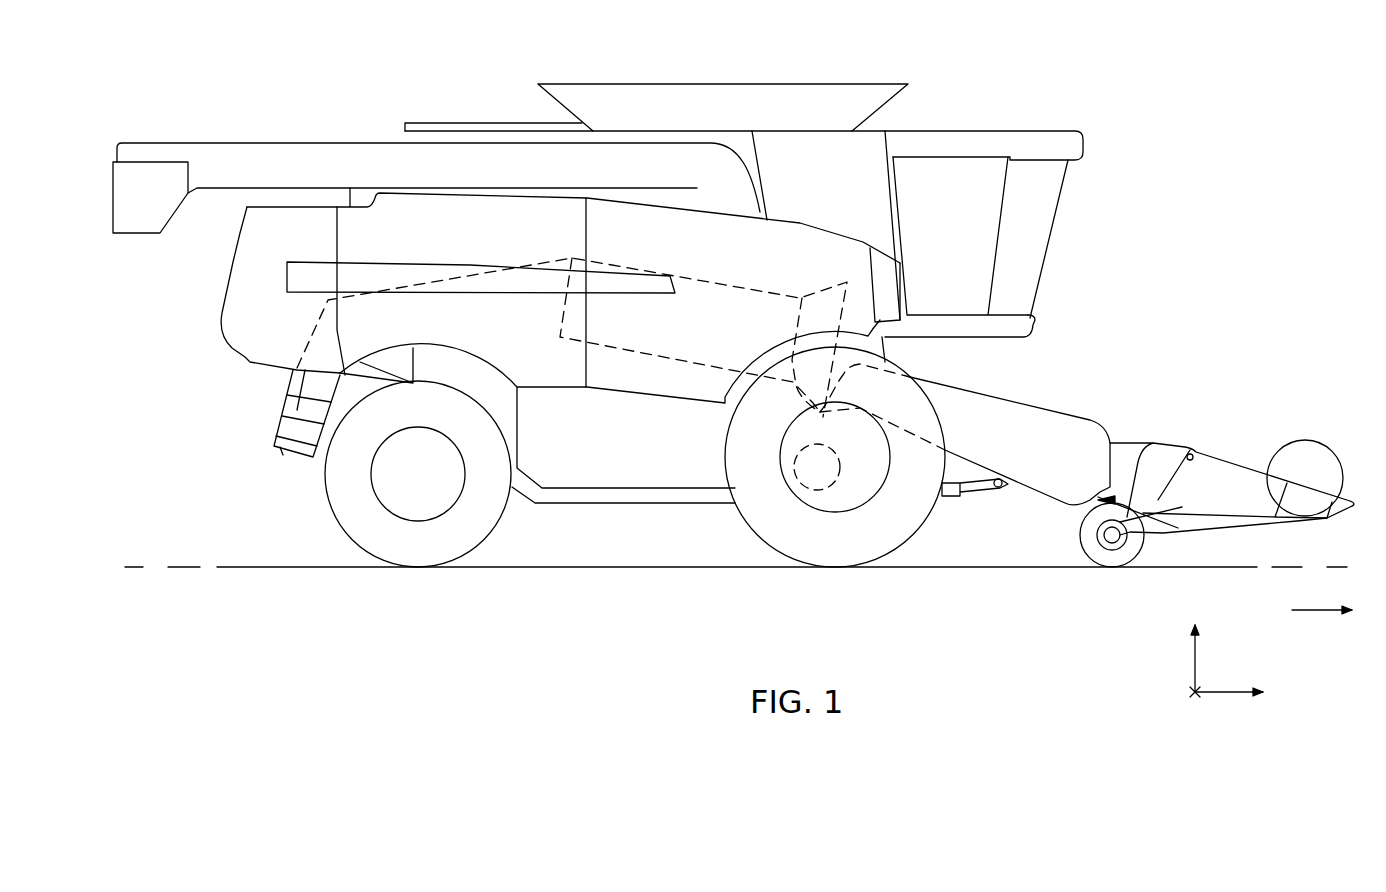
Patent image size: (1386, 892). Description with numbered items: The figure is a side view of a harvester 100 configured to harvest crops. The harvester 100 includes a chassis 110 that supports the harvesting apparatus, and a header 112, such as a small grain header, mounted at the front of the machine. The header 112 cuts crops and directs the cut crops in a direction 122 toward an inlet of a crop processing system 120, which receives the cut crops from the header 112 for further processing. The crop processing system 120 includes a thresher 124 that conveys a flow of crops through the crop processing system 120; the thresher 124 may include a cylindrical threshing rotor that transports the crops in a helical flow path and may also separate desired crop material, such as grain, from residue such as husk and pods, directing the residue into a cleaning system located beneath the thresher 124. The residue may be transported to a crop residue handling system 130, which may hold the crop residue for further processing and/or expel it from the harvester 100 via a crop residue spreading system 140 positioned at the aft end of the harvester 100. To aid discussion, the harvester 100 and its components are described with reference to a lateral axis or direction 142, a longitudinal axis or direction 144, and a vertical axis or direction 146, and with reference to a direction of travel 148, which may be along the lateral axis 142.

The harvester 100 is at (598, 235).
The chassis 110 is at (558, 512).
The header 112 is at (1223, 368).
The crop processing system 120 is at (702, 260).
The direction 122 is at (1147, 515).
The thresher 124 is at (718, 280).
The crop residue handling system 130 is at (432, 262).
The crop residue spreading system 140 is at (277, 425).
The lateral axis or direction 142 is at (1222, 695).
The longitudinal axis or direction 144 is at (1190, 693).
The vertical axis or direction 146 is at (1192, 665).
The direction of travel 148 is at (1315, 607).